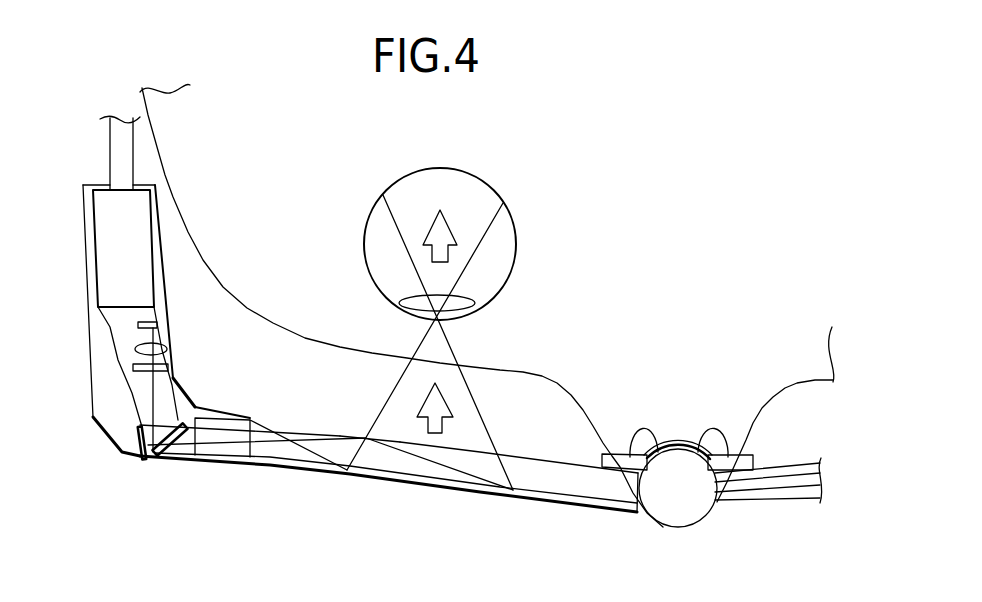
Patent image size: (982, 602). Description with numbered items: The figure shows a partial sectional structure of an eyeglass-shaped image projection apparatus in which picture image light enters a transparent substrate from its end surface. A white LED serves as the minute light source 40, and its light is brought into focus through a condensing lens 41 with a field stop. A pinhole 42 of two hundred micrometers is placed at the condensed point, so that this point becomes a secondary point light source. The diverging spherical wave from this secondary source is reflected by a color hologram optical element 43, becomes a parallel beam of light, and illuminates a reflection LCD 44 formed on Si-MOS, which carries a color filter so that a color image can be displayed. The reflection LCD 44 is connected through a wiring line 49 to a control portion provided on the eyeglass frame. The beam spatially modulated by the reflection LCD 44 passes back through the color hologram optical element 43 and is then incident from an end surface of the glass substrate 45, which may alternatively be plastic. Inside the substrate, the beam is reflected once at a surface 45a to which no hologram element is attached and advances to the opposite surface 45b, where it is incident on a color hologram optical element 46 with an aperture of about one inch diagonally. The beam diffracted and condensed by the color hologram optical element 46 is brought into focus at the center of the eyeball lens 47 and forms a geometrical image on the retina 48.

The minute light source 40 is at (158, 323).
The condensing lens 41 is at (167, 347).
The pinhole 42 is at (167, 372).
The color hologram optical element 43 is at (163, 458).
The reflection LCD 44 is at (125, 438).
The glass substrate 45 is at (389, 376).
The surface of the substrate 45a is at (363, 440).
The opposite surface 45b is at (325, 476).
The color hologram optical element 46 is at (488, 492).
The eyeball lens 47 is at (472, 310).
The retina 48 is at (461, 221).
The wiring line 49 is at (115, 357).